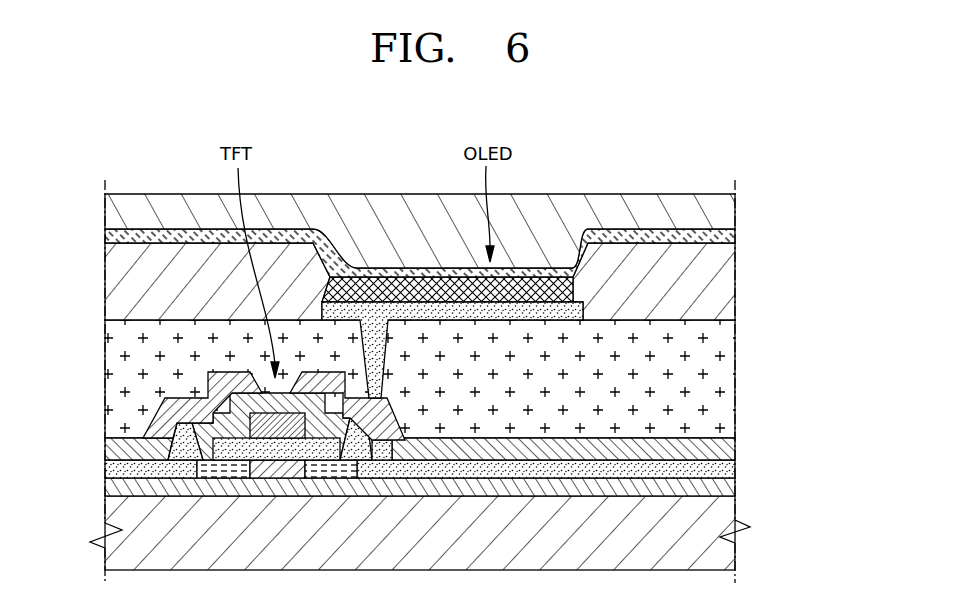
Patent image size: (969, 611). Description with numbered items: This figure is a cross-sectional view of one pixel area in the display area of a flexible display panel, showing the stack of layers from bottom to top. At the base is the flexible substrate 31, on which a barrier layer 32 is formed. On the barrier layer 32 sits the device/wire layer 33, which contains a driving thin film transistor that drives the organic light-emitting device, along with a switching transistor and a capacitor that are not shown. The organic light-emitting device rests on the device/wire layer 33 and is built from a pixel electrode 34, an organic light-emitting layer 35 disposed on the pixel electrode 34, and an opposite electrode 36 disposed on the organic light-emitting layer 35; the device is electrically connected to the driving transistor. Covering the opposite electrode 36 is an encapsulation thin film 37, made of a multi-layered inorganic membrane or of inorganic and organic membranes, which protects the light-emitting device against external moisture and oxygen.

The flexible substrate 31 is at (715, 553).
The barrier layer 32 is at (725, 486).
The device/wire layer 33 is at (775, 320).
The pixel electrode 34 is at (583, 316).
The organic light-emitting layer 35 is at (588, 295).
The opposite electrode 36 is at (735, 237).
The encapsulation thin film 37 is at (722, 212).